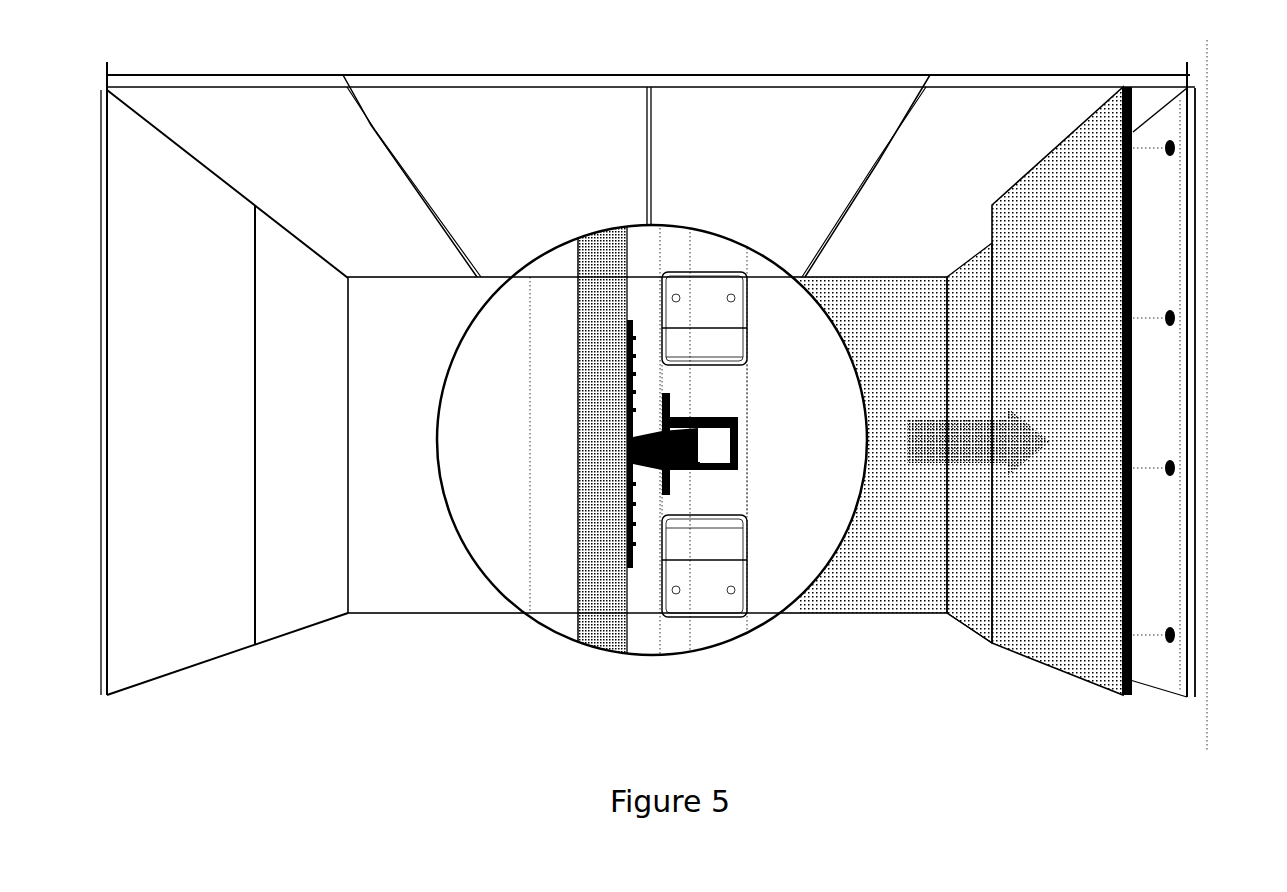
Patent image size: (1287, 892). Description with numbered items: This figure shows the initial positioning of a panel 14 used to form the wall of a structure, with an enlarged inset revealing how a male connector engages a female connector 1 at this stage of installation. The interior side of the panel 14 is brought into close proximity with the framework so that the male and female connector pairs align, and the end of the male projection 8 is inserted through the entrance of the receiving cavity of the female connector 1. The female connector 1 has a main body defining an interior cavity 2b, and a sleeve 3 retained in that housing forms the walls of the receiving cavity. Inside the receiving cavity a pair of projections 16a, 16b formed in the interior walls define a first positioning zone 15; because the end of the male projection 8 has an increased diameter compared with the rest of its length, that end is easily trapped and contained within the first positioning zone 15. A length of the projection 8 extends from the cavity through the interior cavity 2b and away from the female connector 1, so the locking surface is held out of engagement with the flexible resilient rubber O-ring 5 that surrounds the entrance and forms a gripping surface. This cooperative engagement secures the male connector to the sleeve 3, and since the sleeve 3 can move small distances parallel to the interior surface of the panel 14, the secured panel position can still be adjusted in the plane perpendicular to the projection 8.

The female connector 1 is at (709, 286).
The interior cavity 2b is at (695, 546).
The sleeve 3 is at (740, 408).
The O-ring 5 is at (653, 358).
The male projection 8 is at (645, 418).
The panel 14 is at (1055, 192).
The first positioning zone 15 is at (692, 470).
The projection 16a is at (662, 473).
The projection 16b is at (700, 429).